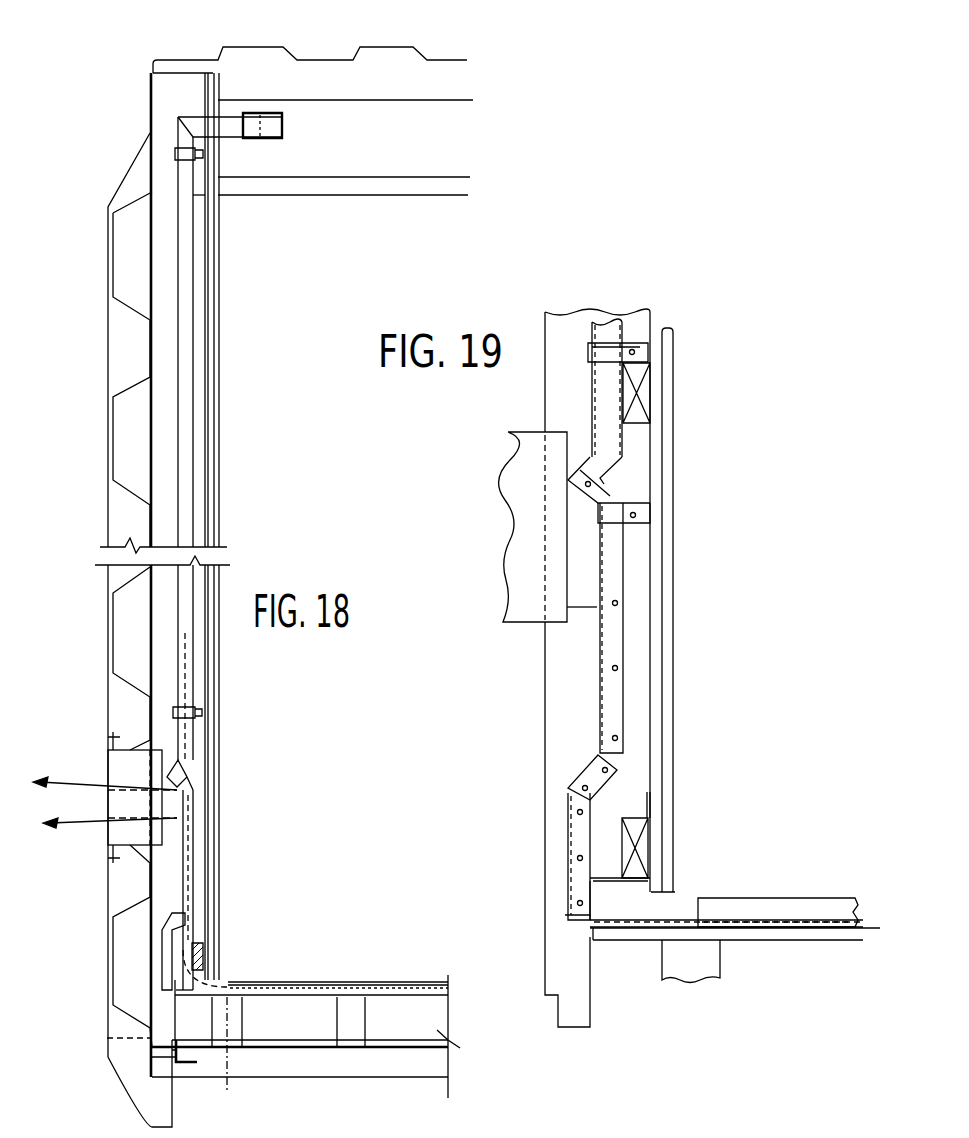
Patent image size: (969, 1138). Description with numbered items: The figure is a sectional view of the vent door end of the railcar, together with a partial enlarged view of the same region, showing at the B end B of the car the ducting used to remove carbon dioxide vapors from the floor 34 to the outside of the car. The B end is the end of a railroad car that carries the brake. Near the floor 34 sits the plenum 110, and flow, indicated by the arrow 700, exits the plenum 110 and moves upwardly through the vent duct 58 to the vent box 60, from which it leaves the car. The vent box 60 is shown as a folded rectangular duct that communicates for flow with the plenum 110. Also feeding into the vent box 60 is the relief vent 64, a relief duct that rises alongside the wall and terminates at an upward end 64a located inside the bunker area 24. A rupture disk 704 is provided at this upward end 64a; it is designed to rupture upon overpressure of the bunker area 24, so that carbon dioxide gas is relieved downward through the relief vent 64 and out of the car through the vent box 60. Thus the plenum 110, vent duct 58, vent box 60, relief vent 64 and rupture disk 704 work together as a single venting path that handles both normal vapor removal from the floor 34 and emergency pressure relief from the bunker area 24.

In FIG. 18, the B end B is at (108, 250).
In FIG. 18, the bunker area 24 is at (413, 130).
In FIG. 18, the floor 34 is at (342, 976).
In FIG. 19, the floor 34 is at (803, 892).
In FIG. 18, the vent duct 58 is at (200, 850).
In FIG. 19, the vent duct 58 is at (640, 597).
In FIG. 18, the vent box 60 is at (130, 748).
In FIG. 19, the vent box 60 is at (532, 432).
In FIG. 18, the relief vent 64 is at (185, 273).
In FIG. 19, the relief vent 64 is at (588, 383).
In FIG. 18, the upward end 64a is at (272, 140).
In FIG. 18, the plenum 110 is at (223, 980).
In FIG. 19, the plenum 110 is at (685, 897).
In FIG. 18, the arrow 700 is at (200, 888).
In FIG. 18, the rupture disk 704 is at (272, 113).